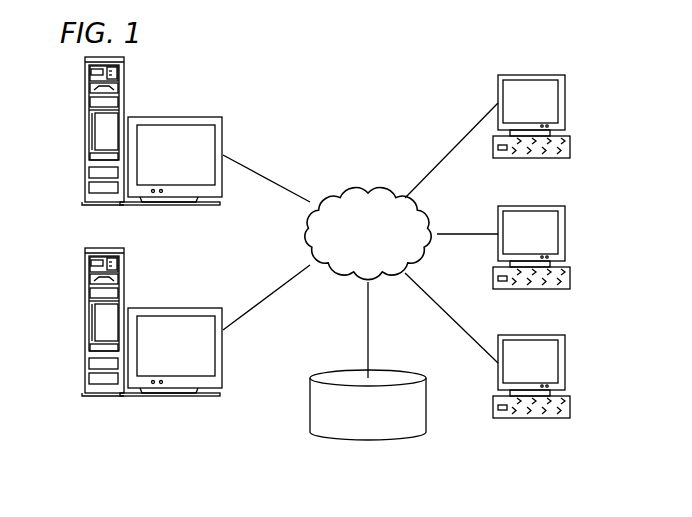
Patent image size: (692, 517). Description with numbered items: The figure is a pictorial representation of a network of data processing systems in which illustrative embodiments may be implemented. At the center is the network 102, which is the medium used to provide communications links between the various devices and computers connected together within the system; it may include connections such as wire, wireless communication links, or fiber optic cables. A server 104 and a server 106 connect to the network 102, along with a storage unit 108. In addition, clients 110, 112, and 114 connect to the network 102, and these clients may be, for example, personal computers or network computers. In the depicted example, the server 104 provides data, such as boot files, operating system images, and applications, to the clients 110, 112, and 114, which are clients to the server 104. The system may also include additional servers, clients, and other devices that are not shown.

The network 102 is at (342, 191).
The server 104 is at (85, 132).
The server 106 is at (85, 318).
The storage unit 108 is at (352, 441).
The client 110 is at (565, 103).
The client 112 is at (565, 234).
The client 114 is at (565, 365).